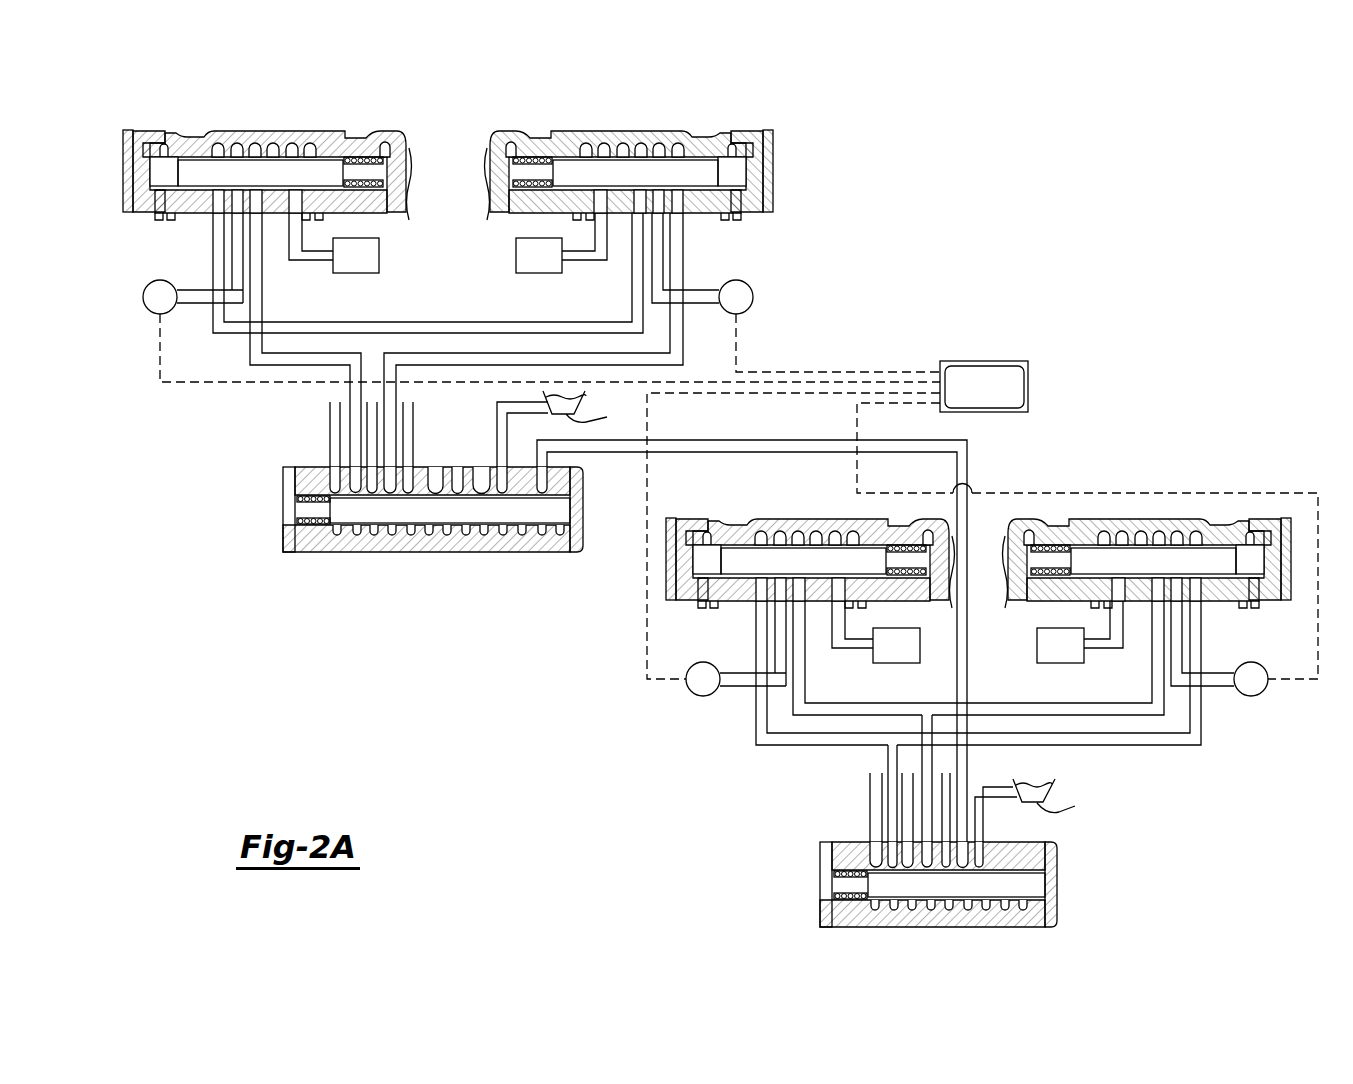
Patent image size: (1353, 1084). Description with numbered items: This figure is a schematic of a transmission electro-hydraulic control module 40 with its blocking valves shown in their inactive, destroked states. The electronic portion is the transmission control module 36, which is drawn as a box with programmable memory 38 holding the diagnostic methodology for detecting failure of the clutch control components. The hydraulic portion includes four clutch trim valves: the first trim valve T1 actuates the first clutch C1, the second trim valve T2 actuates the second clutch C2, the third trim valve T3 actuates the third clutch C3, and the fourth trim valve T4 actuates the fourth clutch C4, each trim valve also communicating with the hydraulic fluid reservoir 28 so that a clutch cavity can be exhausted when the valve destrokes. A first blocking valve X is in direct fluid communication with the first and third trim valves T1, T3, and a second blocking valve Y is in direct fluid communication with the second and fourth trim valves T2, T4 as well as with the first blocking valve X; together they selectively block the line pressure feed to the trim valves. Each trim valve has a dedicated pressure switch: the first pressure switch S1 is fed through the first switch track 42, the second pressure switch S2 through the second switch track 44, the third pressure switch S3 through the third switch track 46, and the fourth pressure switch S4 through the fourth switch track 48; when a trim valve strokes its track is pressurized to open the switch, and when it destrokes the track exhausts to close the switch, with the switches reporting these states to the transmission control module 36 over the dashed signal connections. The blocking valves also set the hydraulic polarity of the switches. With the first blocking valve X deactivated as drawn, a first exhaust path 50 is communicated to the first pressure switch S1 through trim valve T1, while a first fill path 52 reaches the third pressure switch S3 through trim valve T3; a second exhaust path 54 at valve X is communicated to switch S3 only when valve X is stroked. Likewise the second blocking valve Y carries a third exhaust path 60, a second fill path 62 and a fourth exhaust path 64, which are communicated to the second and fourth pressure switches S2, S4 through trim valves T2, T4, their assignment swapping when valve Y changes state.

The first trim valve T1 is at (252, 128).
The second trim valve T2 is at (802, 508).
The third trim valve T3 is at (636, 128).
The fourth trim valve T4 is at (1177, 511).
The first pressure switch S1 is at (143, 298).
The second pressure switch S2 is at (705, 697).
The third pressure switch S3 is at (753, 297).
The fourth pressure switch S4 is at (1251, 697).
The first clutch C1 is at (334, 243).
The second clutch C2 is at (876, 632).
The third clutch C3 is at (561, 243).
The fourth clutch C4 is at (1080, 632).
The first blocking valve X is at (430, 553).
The second blocking valve Y is at (1058, 886).
The hydraulic fluid reservoir 28 is at (799, 616).
The transmission control module 36 is at (970, 361).
The programmable memory 38 is at (1012, 361).
The transmission electro-hydraulic control module 40 is at (967, 238).
The first switch track 42 is at (204, 290).
The second switch track 44 is at (746, 667).
The third switch track 46 is at (701, 290).
The fourth switch track 48 is at (1218, 667).
The first exhaust path 50 is at (413, 412).
The first fill path 52 is at (367, 434).
The second exhaust path 54 is at (330, 411).
The third exhaust path 60 is at (940, 788).
The second fill path 62 is at (900, 805).
The fourth exhaust path 64 is at (870, 827).